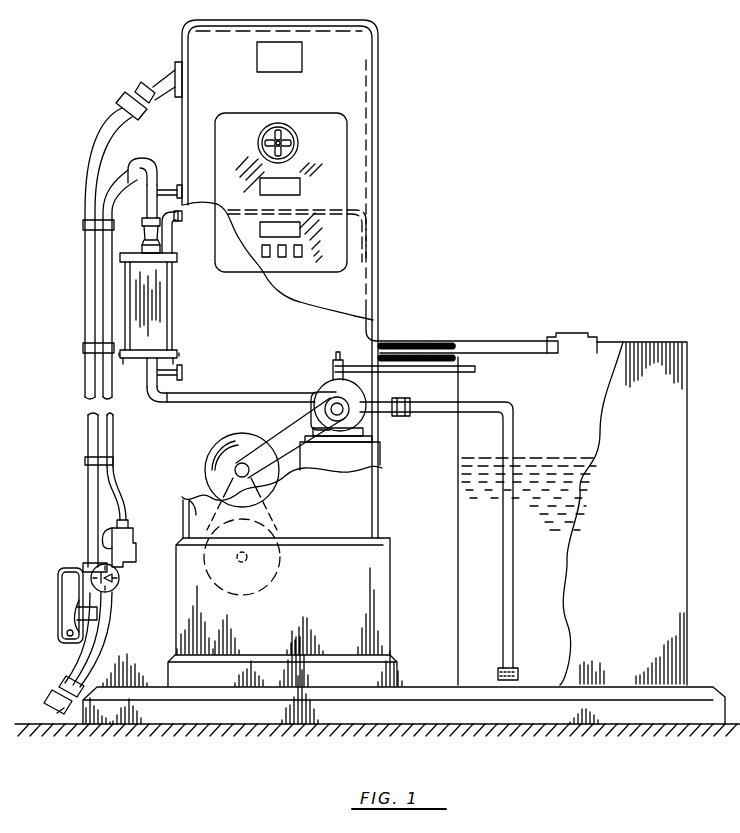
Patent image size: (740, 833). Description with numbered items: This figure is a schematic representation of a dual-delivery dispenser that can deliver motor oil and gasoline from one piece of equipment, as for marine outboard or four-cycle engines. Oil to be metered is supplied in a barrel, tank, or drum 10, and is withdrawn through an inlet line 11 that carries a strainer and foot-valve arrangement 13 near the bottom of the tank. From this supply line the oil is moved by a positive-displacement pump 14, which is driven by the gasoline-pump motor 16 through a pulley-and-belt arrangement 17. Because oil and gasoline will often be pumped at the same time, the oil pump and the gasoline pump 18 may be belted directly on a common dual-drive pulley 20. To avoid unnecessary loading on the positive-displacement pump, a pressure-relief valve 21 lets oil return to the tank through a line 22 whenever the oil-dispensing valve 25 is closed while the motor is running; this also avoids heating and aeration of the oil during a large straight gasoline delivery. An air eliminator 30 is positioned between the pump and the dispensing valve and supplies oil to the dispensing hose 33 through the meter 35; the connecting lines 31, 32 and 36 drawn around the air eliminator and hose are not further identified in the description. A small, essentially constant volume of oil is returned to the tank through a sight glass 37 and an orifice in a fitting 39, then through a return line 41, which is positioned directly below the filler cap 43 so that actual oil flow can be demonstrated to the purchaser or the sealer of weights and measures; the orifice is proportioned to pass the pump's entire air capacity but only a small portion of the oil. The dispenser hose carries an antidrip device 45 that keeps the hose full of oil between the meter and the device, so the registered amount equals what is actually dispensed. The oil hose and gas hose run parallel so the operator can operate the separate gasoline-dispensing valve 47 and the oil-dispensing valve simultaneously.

The drum 10 is at (640, 563).
The inlet line 11 is at (513, 563).
The strainer and foot-valve arrangement 13 is at (517, 670).
The positive-displacement pump 14 is at (327, 381).
The gasoline-pump motor 16 is at (204, 465).
The pulley-and-belt arrangement 17 is at (274, 424).
The gasoline pump 18 is at (262, 592).
The dual-drive pulley 20 is at (218, 452).
The pressure-relief valve 21 is at (333, 364).
The line 22 is at (407, 373).
The oil-dispensing valve 25 is at (130, 531).
The air eliminator 30 is at (163, 318).
The lower filter pipe 31 is at (148, 372).
The upper filter pipe 32 is at (148, 190).
The dispenser hose 33 is at (100, 650).
The meter 35 is at (116, 589).
The hose 36 is at (121, 484).
The sight glass 37 is at (172, 236).
The fitting 39 is at (178, 217).
The return line 41 is at (510, 355).
The filler cap 43 is at (570, 334).
The antidrip device 45 is at (57, 710).
The gasoline-dispensing valve 47 is at (60, 596).